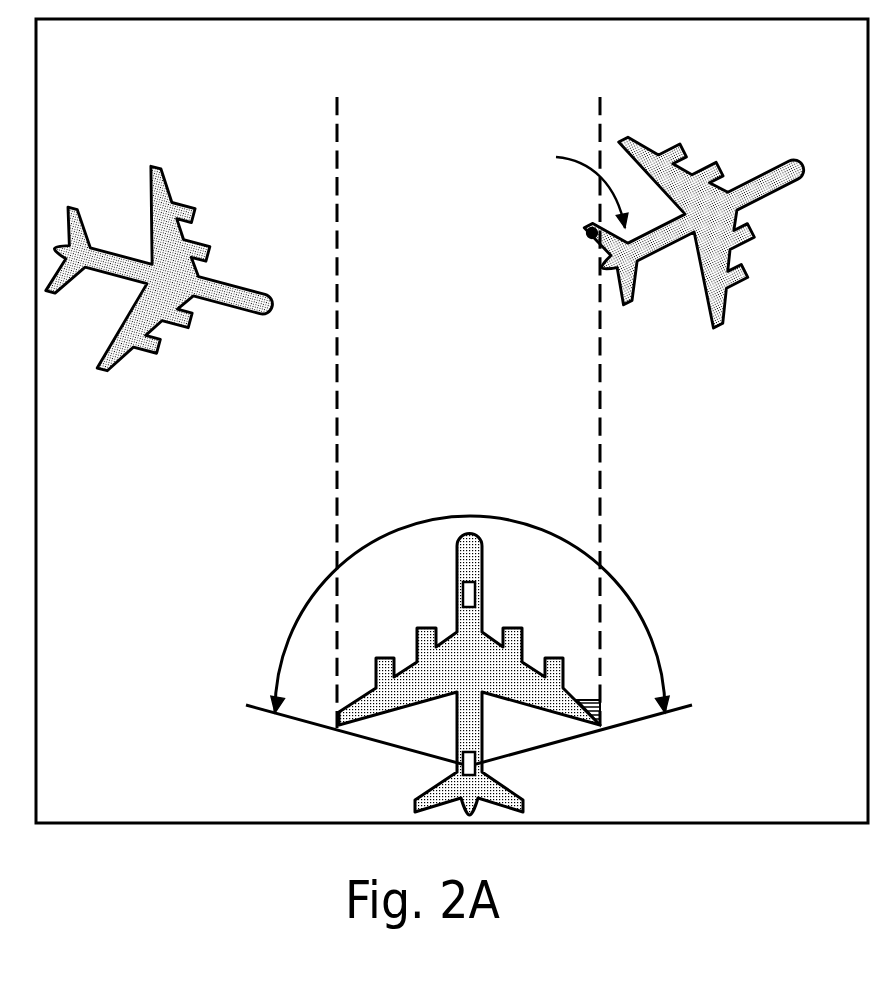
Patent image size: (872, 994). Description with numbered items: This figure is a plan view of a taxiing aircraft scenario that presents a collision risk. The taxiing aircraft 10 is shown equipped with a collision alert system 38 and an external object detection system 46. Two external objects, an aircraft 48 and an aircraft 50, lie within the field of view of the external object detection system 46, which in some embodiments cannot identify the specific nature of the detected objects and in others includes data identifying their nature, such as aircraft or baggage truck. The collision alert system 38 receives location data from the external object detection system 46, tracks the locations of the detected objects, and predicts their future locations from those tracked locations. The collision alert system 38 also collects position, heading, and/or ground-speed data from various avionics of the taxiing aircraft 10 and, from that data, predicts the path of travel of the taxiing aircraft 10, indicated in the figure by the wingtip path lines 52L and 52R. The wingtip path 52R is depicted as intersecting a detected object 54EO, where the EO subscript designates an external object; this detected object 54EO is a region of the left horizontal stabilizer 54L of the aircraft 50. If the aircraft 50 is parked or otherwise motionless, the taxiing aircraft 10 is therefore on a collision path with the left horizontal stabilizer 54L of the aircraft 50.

The taxiing aircraft 10 is at (538, 627).
The collision alert system 38 is at (463, 590).
The external object detection system 46 is at (463, 765).
The aircraft 48 is at (240, 245).
The aircraft 50 is at (735, 148).
The wingtip path line 52L is at (337, 190).
The wingtip path line 52R is at (600, 375).
The left horizontal stabilizer 54L is at (570, 185).
The detected object 54EO is at (592, 233).